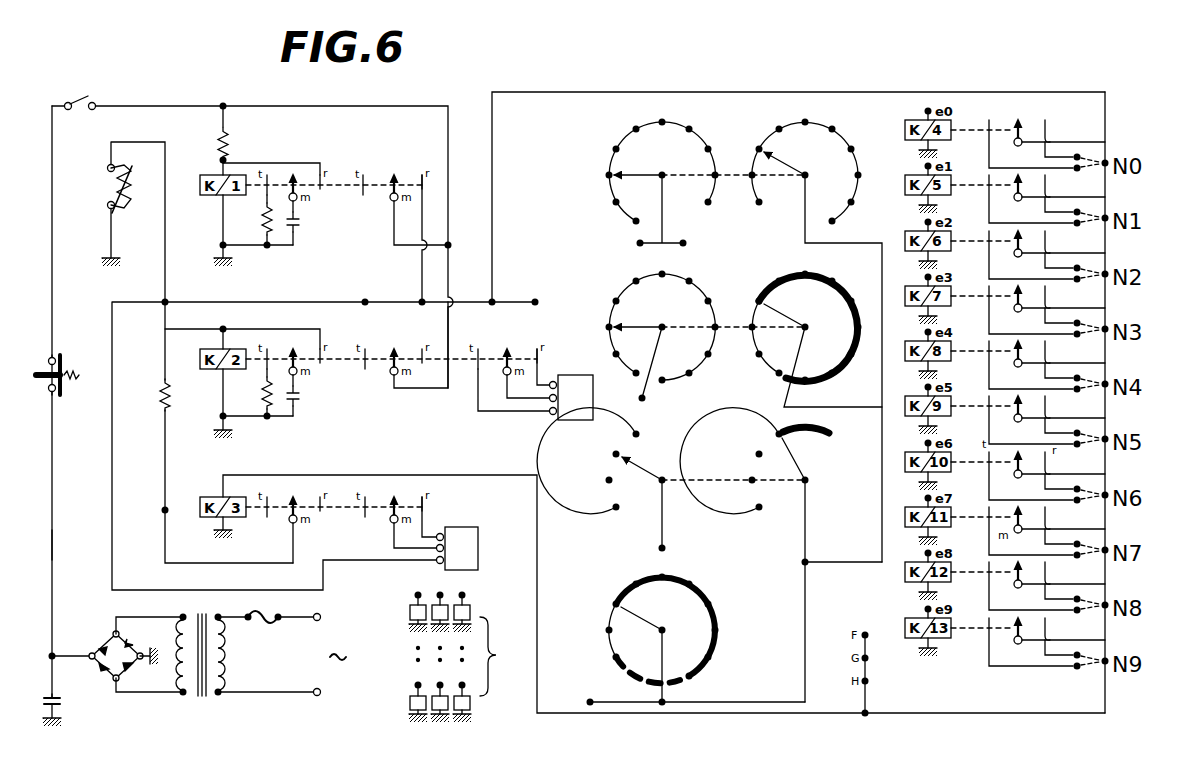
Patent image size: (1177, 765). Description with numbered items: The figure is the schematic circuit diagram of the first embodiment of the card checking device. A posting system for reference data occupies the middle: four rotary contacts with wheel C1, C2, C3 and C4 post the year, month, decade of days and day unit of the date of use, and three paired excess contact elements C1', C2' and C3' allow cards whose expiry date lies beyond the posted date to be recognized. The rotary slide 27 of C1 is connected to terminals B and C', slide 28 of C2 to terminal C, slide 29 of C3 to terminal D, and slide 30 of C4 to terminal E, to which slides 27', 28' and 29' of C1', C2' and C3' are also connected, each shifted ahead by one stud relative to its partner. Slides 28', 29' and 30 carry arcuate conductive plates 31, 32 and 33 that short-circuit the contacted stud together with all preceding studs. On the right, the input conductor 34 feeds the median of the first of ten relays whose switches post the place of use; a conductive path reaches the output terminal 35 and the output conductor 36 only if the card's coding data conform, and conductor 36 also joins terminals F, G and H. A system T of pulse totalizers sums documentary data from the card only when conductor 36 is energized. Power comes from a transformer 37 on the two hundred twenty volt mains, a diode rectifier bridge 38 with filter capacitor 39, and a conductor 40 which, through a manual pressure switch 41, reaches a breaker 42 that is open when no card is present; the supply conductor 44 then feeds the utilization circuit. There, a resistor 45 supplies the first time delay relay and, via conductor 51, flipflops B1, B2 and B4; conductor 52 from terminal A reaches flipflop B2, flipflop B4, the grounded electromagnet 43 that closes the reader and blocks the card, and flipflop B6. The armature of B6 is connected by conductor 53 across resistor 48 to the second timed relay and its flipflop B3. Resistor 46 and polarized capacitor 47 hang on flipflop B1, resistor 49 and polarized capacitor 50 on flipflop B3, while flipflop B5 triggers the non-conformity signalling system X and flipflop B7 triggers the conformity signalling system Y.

The rotary slide 27 is at (641, 162).
The rotary slide 27' is at (795, 161).
The rotary slide 28 is at (643, 315).
The rotary slide 28' is at (798, 315).
The rotary slide 29 is at (644, 487).
The rotary slide 29' is at (832, 467).
The rotary slide 30 is at (637, 618).
The conductive plate 31 is at (808, 328).
The conductive plate 32 is at (822, 436).
The conductive plate 33 is at (684, 666).
The input conductor 34 is at (560, 92).
The output terminal 35 is at (1100, 668).
The output conductor 36 is at (448, 474).
The transformer 37 is at (258, 668).
The diode rectifier bridge 38 is at (92, 643).
The filter capacitor 39 is at (64, 698).
The conductor 40 is at (54, 546).
The manual pressure switch 41 is at (64, 398).
The breaker 42 is at (92, 100).
The electromagnet 43 is at (126, 204).
The supply conductor 44 is at (415, 106).
The resistor 45 is at (216, 148).
The resistor 46 is at (261, 219).
The polarized capacitor 47 is at (300, 223).
The resistor 48 is at (161, 400).
The resistor 49 is at (261, 390).
The polarized capacitor 50 is at (296, 396).
The conductor 51 is at (236, 162).
The conductor 52 is at (184, 298).
The conductor 53 is at (164, 512).
The two-state switch B1 is at (292, 170).
The two-state switch B2 is at (397, 170).
The two-state switch B3 is at (285, 344).
The two-state switch B4 is at (395, 346).
The two-state switch B5 is at (507, 346).
The two-state switch B6 is at (285, 493).
The two-state switch B7 is at (391, 493).
The rotary contact with wheel C1 is at (626, 179).
The excess contact element C1' is at (810, 331).
The rotary contact with wheel C2 is at (655, 358).
The excess contact element C2' is at (801, 341).
The rotary contact with wheel C3 is at (601, 482).
The excess contact element C3' is at (781, 555).
The rotary contact with wheel C4 is at (740, 594).
The signalling system X is at (572, 397).
The signalling system Y is at (458, 548).
The system of pulse totalizers T is at (461, 650).